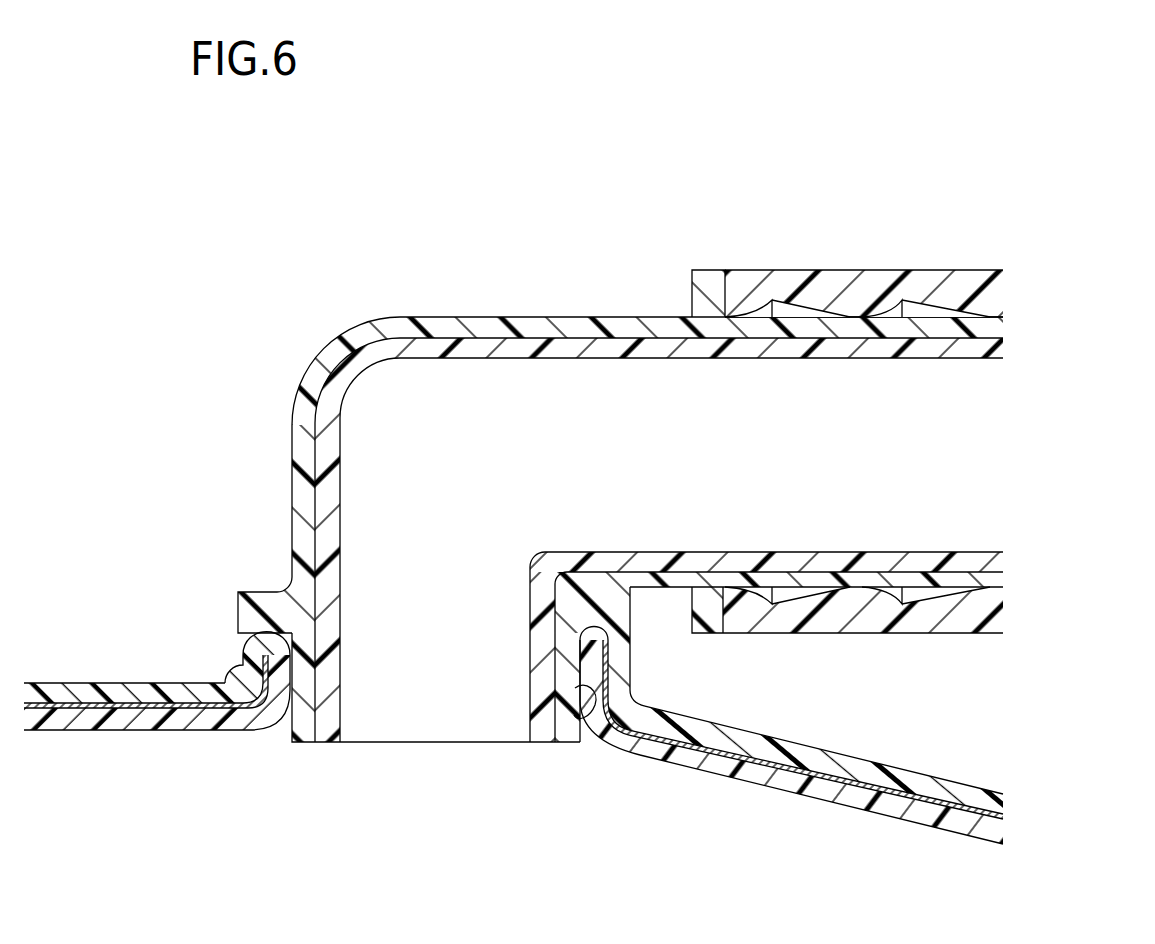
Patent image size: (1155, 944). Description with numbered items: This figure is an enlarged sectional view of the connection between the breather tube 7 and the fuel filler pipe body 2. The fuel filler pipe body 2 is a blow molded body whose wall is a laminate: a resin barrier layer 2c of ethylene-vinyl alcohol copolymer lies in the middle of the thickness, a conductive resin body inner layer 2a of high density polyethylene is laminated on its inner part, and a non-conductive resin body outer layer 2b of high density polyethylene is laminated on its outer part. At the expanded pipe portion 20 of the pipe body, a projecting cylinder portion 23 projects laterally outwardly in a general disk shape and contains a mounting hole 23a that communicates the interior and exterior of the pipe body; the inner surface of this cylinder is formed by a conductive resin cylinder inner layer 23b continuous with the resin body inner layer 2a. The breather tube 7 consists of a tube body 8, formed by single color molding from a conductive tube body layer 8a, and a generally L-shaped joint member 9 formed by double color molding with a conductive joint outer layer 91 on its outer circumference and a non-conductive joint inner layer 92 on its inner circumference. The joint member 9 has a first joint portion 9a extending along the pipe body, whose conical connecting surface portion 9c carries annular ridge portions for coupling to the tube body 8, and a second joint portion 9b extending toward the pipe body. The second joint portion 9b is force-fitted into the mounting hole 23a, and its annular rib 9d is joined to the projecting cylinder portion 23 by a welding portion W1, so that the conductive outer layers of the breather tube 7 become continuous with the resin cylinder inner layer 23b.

The breather tube 7 is at (760, 133).
The joint member 9 is at (641, 282).
The tube body 8 is at (765, 240).
The tube body layer 8a is at (933, 270).
The first joint portion 9a is at (974, 312).
The second joint portion 9b is at (284, 374).
The conical connecting surface portion 9c is at (806, 270).
The annular rib 9d is at (238, 592).
The joint outer layer 91 is at (437, 328).
The joint inner layer 92 is at (513, 348).
The fuel filler pipe body 2 is at (972, 695).
The resin body inner layer 2a is at (838, 790).
The resin body outer layer 2b is at (943, 788).
The resin barrier layer 2c is at (888, 788).
The expanded pipe portion 20 is at (128, 683).
The projecting cylinder portion 23 is at (631, 675).
The mounting hole 23a is at (298, 670).
The resin cylinder inner layer 23b is at (590, 687).
The welding portion W1 is at (597, 625).